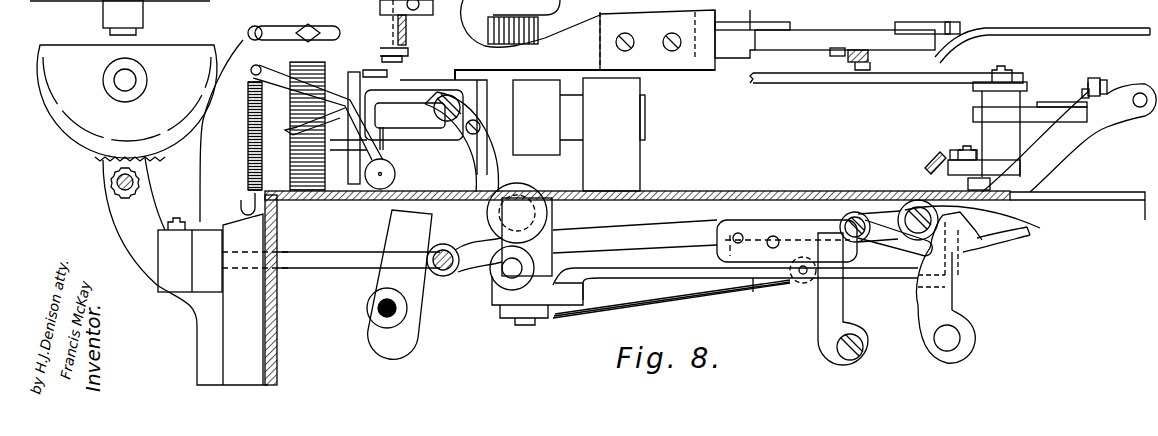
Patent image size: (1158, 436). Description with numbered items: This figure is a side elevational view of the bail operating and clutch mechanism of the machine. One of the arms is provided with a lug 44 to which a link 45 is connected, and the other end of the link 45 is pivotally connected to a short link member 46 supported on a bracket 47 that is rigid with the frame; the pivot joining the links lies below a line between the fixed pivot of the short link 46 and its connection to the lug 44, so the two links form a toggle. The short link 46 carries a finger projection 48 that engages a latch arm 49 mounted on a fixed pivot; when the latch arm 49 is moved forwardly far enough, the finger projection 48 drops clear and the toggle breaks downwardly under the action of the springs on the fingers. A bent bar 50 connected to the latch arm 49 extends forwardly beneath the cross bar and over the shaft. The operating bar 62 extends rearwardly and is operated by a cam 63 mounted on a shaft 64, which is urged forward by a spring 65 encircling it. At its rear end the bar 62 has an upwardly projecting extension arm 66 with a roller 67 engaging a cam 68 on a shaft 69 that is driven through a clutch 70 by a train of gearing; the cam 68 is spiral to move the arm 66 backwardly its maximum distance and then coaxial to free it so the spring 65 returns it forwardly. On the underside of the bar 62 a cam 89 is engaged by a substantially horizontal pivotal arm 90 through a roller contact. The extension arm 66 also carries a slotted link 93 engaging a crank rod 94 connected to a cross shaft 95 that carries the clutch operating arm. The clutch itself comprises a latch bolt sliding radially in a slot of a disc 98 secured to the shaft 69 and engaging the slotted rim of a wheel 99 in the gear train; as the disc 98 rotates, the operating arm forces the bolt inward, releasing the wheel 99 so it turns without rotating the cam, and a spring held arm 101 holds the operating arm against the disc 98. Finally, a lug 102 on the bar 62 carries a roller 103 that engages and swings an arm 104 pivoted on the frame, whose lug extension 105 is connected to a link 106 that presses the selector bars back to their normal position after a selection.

The lug 44 is at (938, 24).
The link 45 is at (870, 36).
The short link member 46 is at (745, 60).
The bracket 47 is at (688, 65).
The finger projection 48 is at (830, 185).
The latch arm 49 is at (822, 318).
The bent bar 50 is at (1020, 28).
The operating bar 62 is at (1078, 150).
The cam 63 is at (382, 285).
The shaft 64 is at (392, 60).
The spring 65 is at (408, 44).
The extension arm 66 is at (480, 200).
The roller 67 is at (453, 78).
The cam 68 is at (490, 162).
The shaft 69 is at (576, 135).
The clutch 70 is at (362, 66).
The cam 89 is at (860, 250).
The pivotal arm 90 is at (753, 280).
The slotted link 93 is at (422, 115).
The crank rod 94 is at (385, 147).
The cross shaft 95 is at (374, 190).
The disc 98 is at (360, 86).
The wheel 99 is at (287, 98).
The spring held arm 101 is at (253, 30).
The lug 102 is at (1107, 80).
The roller 103 is at (1082, 92).
The arm 104 is at (1088, 80).
The lug extension 105 is at (955, 158).
The link 106 is at (928, 168).